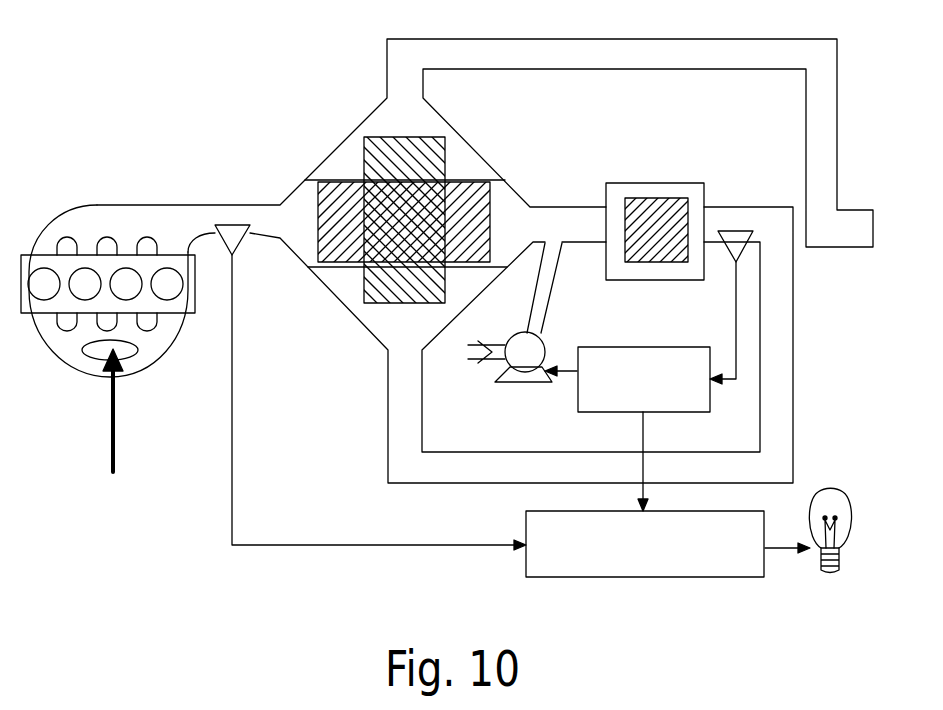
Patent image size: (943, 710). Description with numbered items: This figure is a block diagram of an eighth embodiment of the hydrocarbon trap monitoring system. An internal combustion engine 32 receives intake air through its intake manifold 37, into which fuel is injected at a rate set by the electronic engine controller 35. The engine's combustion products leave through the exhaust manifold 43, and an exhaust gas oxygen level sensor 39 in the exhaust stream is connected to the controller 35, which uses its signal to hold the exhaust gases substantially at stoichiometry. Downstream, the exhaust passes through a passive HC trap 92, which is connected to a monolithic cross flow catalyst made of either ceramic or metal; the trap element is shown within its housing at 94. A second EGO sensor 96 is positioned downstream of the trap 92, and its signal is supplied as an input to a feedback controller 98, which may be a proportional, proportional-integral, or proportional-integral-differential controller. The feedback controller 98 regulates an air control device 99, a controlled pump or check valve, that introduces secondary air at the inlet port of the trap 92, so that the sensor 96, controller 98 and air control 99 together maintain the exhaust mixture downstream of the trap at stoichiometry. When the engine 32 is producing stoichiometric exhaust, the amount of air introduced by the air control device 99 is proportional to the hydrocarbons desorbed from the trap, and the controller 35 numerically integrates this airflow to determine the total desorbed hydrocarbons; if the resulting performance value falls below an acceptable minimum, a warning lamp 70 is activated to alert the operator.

The internal combustion engine 32 is at (200, 292).
The intake manifold 37 is at (63, 333).
The exhaust manifold 43 is at (97, 213).
The exhaust gas oxygen (EGO) level sensor 39 is at (237, 233).
The hydrocarbon trap chamber 94 is at (457, 130).
The passive HC trap 92 is at (665, 182).
The EGO sensor 96 is at (723, 263).
The air control device 99 is at (545, 333).
The feedback controller 98 is at (592, 412).
The electronic engine controller (EEC) 35 is at (527, 530).
The warning lamp 70 is at (840, 502).